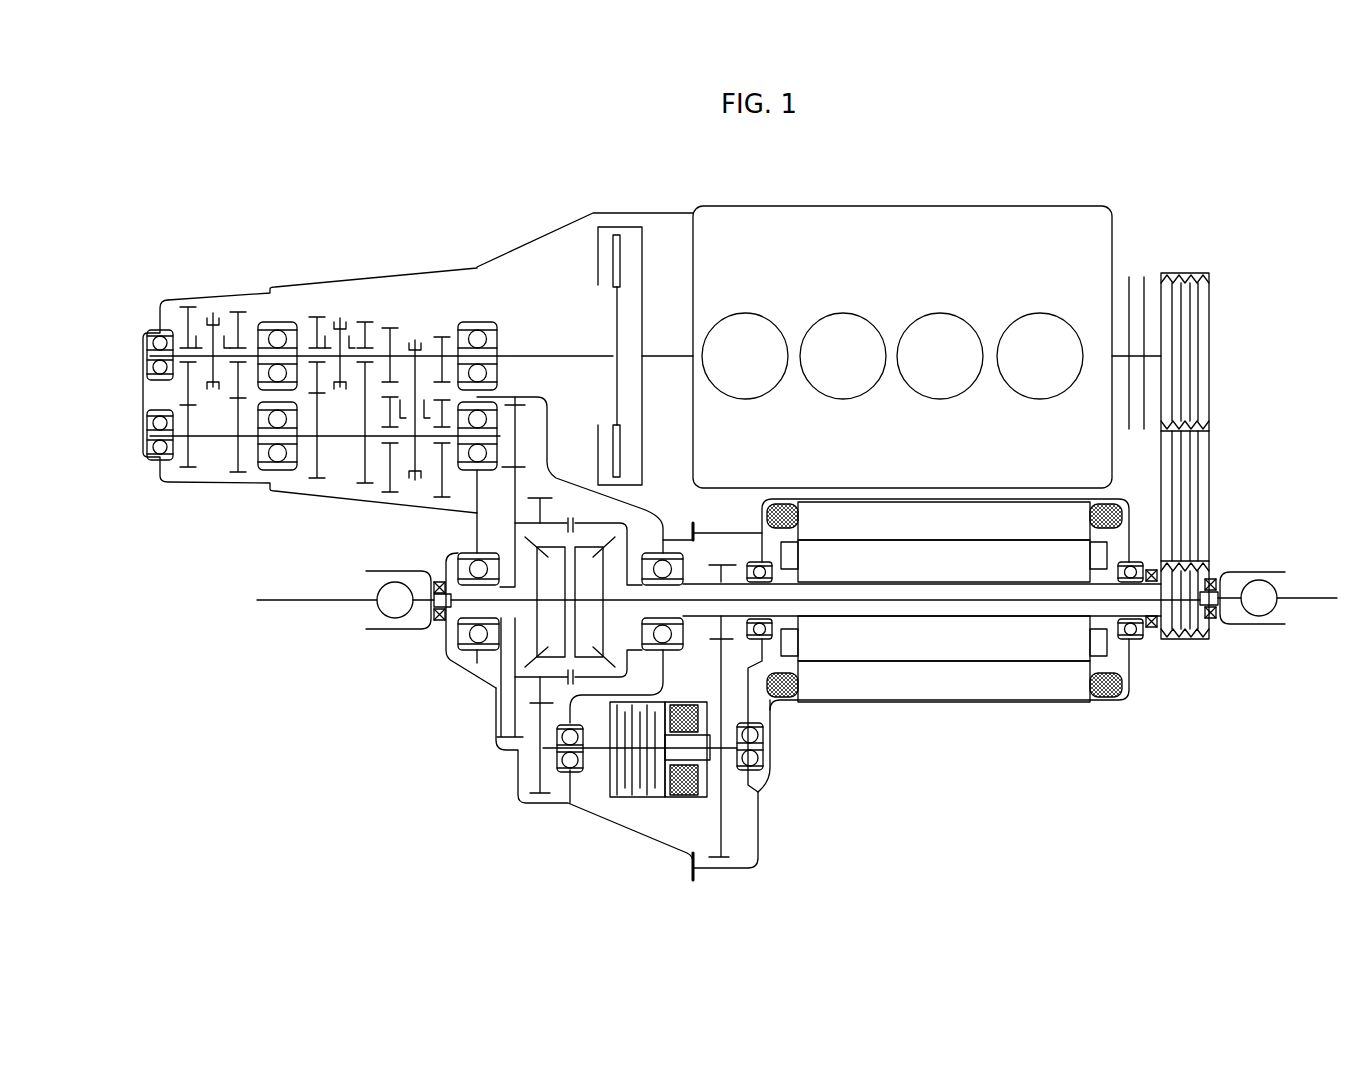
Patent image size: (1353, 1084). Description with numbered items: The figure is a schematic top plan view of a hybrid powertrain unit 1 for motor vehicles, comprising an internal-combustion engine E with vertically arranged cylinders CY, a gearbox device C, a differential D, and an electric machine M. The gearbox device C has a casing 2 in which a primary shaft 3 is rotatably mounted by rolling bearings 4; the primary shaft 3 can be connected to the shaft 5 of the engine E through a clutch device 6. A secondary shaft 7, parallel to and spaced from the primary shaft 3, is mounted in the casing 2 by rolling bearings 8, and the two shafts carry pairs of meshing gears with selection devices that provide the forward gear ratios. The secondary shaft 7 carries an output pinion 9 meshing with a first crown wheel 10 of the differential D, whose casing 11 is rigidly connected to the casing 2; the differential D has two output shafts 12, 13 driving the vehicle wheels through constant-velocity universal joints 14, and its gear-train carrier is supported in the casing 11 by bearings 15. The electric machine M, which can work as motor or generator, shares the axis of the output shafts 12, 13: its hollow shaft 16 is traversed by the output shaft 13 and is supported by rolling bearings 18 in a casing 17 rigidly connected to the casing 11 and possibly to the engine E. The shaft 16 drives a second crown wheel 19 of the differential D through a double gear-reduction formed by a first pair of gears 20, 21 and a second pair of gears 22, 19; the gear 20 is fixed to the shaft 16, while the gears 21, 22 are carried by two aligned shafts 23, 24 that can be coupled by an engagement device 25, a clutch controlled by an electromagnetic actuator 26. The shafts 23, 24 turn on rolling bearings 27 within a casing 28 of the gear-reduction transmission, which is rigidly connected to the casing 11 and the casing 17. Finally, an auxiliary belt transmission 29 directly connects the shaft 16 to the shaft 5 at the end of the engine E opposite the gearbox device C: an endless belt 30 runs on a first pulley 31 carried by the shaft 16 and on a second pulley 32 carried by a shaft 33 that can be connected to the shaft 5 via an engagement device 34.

The hybrid powertrain unit 1 is at (270, 168).
The casing 2 is at (440, 268).
The primary shaft 3 is at (540, 350).
The rolling bearings 4 is at (158, 338).
The shaft of the engine 5 is at (665, 350).
The clutch device 6 is at (650, 240).
The secondary shaft 7 is at (215, 440).
The rolling bearings 8 is at (152, 448).
The output pinion 9 is at (515, 412).
The first crown wheel 10 is at (518, 472).
The casing 11 is at (492, 727).
The output shaft 12 is at (445, 651).
The output shaft 13 is at (1025, 602).
The constant-velocity universal joints 14 is at (390, 605).
The bearings 15 is at (478, 567).
The shaft of the electric machine 16 is at (873, 575).
The casing of the electric machine 17 is at (895, 700).
The rolling bearings 18 is at (760, 560).
The second crown wheel 19 is at (548, 505).
The gear 20 is at (710, 575).
The gear 21 is at (721, 683).
The gear 22 is at (540, 773).
The shaft 23 is at (727, 765).
The shaft 24 is at (597, 755).
The engagement device 25 is at (640, 800).
The electromagnetic actuator 26 is at (690, 795).
The rolling bearings 27 is at (567, 760).
The casing of the gear-reduction transmission 28 is at (686, 860).
The auxiliary belt transmission 29 is at (1228, 478).
The endless belt 30 is at (1195, 520).
The first pulley 31 is at (1190, 640).
The second pulley 32 is at (1190, 330).
The shaft 33 is at (1147, 345).
The engagement device 34 is at (1135, 270).
The gearbox device C is at (142, 356).
The internal-combustion engine E is at (1103, 245).
The cylinders CY is at (835, 318).
The electric machine M is at (955, 672).
The differential D is at (499, 675).